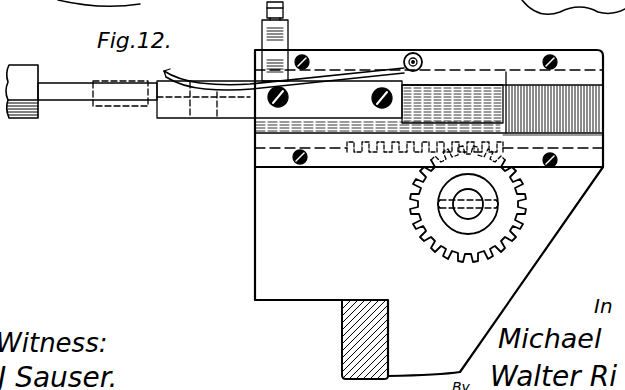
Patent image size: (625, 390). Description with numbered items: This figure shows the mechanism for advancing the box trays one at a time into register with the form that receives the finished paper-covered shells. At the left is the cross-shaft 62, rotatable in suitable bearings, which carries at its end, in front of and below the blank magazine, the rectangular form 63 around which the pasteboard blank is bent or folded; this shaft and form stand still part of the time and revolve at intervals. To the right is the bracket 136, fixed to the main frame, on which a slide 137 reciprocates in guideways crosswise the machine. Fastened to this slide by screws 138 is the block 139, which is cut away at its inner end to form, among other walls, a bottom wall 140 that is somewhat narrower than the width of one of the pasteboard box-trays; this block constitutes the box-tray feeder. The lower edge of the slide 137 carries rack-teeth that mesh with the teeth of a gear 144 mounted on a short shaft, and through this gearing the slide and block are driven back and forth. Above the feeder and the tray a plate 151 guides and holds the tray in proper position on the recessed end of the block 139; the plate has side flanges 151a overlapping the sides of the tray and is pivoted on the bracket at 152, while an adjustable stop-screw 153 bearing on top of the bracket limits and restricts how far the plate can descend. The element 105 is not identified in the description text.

The cross-shaft 62 is at (24, 119).
The rectangular form 63 is at (75, 96).
The gear wheel 105 is at (480, 183).
The bracket 136 is at (558, 203).
The slide 137 is at (507, 103).
The screws 138 is at (279, 107).
The block 139 is at (301, 97).
The bottom wall 140 is at (345, 130).
The gear 144 is at (527, 196).
The plate 151 is at (218, 71).
The side flanges 151a is at (215, 112).
The pivot 152 is at (410, 55).
The adjustable stop-screw 153 is at (285, 8).